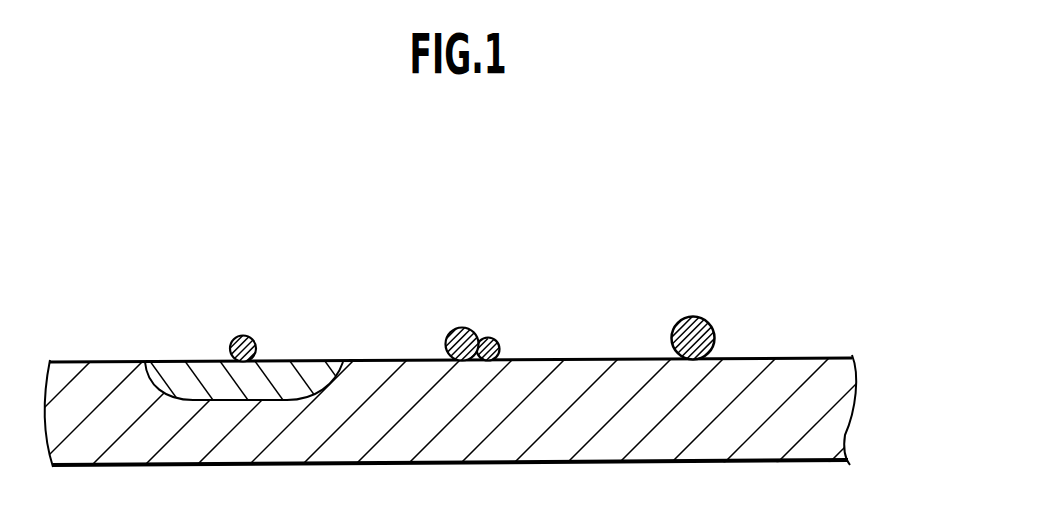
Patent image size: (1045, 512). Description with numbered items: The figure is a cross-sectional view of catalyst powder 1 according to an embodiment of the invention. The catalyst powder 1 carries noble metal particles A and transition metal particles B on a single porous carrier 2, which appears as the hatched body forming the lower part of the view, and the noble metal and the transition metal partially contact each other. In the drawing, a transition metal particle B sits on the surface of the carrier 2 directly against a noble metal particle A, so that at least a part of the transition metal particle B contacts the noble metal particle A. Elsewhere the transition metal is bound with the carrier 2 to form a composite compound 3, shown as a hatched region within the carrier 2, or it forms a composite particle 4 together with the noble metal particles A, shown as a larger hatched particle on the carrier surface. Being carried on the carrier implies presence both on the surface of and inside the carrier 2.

The catalyst powder 1 is at (522, 312).
The porous carrier 2 is at (522, 374).
The composite compound 3 is at (283, 358).
The composite particle 4 is at (703, 318).
The noble metal particle A is at (498, 347).
The transition metal particle B is at (465, 328).